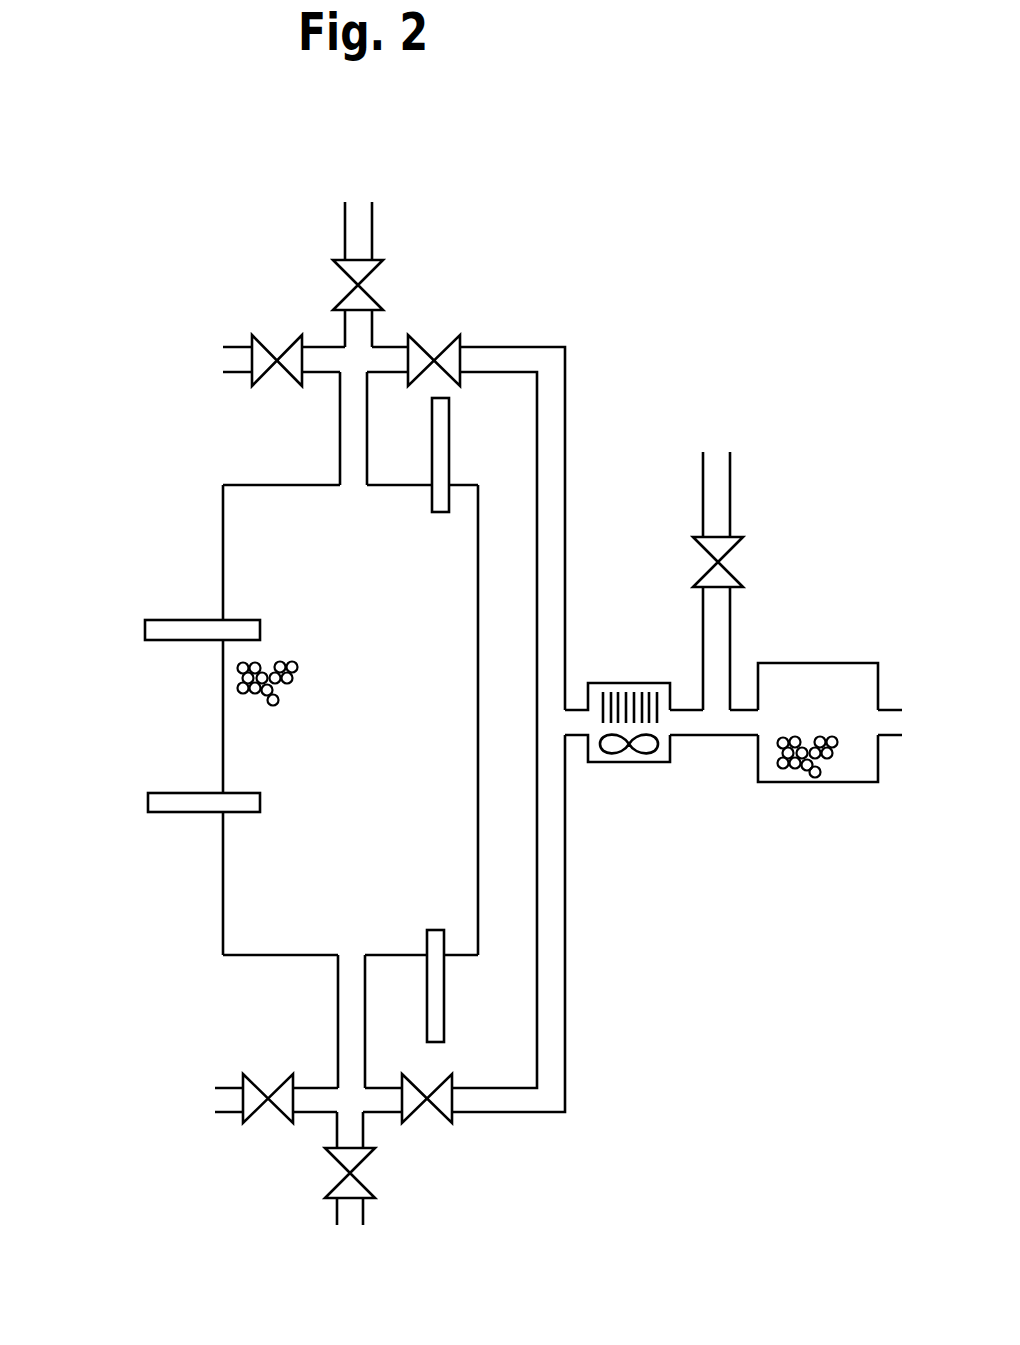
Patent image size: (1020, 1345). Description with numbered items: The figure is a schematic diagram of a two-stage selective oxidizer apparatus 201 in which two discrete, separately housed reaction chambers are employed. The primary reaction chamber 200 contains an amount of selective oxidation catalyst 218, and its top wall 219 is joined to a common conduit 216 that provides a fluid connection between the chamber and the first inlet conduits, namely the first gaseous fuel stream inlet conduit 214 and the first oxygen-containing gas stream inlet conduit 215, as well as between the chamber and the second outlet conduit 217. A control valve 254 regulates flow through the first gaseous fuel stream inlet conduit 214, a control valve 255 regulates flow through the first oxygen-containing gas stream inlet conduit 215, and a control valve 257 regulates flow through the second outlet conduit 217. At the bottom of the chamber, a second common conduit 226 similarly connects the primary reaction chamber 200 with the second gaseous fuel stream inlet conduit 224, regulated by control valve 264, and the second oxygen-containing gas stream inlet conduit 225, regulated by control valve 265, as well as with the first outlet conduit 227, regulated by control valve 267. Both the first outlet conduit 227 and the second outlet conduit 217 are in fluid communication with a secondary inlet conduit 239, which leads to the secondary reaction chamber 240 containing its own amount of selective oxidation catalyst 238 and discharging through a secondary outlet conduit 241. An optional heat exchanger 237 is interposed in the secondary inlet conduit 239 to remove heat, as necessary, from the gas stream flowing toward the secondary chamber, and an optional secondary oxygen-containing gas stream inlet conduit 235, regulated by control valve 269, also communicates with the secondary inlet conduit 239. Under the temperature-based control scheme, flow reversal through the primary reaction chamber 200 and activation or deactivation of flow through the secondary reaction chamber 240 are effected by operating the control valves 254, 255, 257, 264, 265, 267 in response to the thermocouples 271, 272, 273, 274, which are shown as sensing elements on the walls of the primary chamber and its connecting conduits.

The primary reaction chamber 200 is at (252, 877).
The two-stage selective oxidizer apparatus 201 is at (178, 465).
The first gaseous fuel stream inlet conduit 214 is at (378, 216).
The first oxygen-containing gas stream inlet conduit 215 is at (238, 379).
The common conduit 216 is at (348, 460).
The second outlet conduit 217 is at (493, 353).
The selective oxidation catalyst 218 is at (250, 695).
The chamber top wall 219 is at (265, 485).
The second gaseous fuel stream inlet conduit 224 is at (355, 1222).
The second oxygen-containing gas stream inlet conduit 225 is at (230, 1087).
The common conduit 226 is at (338, 980).
The first outlet conduit 227 is at (498, 1112).
The secondary oxygen-containing gas stream inlet conduit 235 is at (725, 490).
The heat exchanger 237 is at (640, 688).
The selective oxidation catalyst 238 is at (815, 773).
The secondary inlet conduit 239 is at (723, 730).
The secondary reaction chamber 240 is at (775, 670).
The secondary outlet conduit 241 is at (893, 712).
The control valve 254 is at (340, 263).
The control valve 255 is at (252, 337).
The control valve 257 is at (428, 342).
The control valve 264 is at (342, 1188).
The control valve 265 is at (282, 1107).
The control valve 267 is at (417, 1117).
The control valve 269 is at (737, 573).
The thermocouple 271 is at (173, 793).
The thermocouple 272 is at (447, 1005).
The thermocouple 273 is at (168, 640).
The thermocouple 274 is at (449, 408).